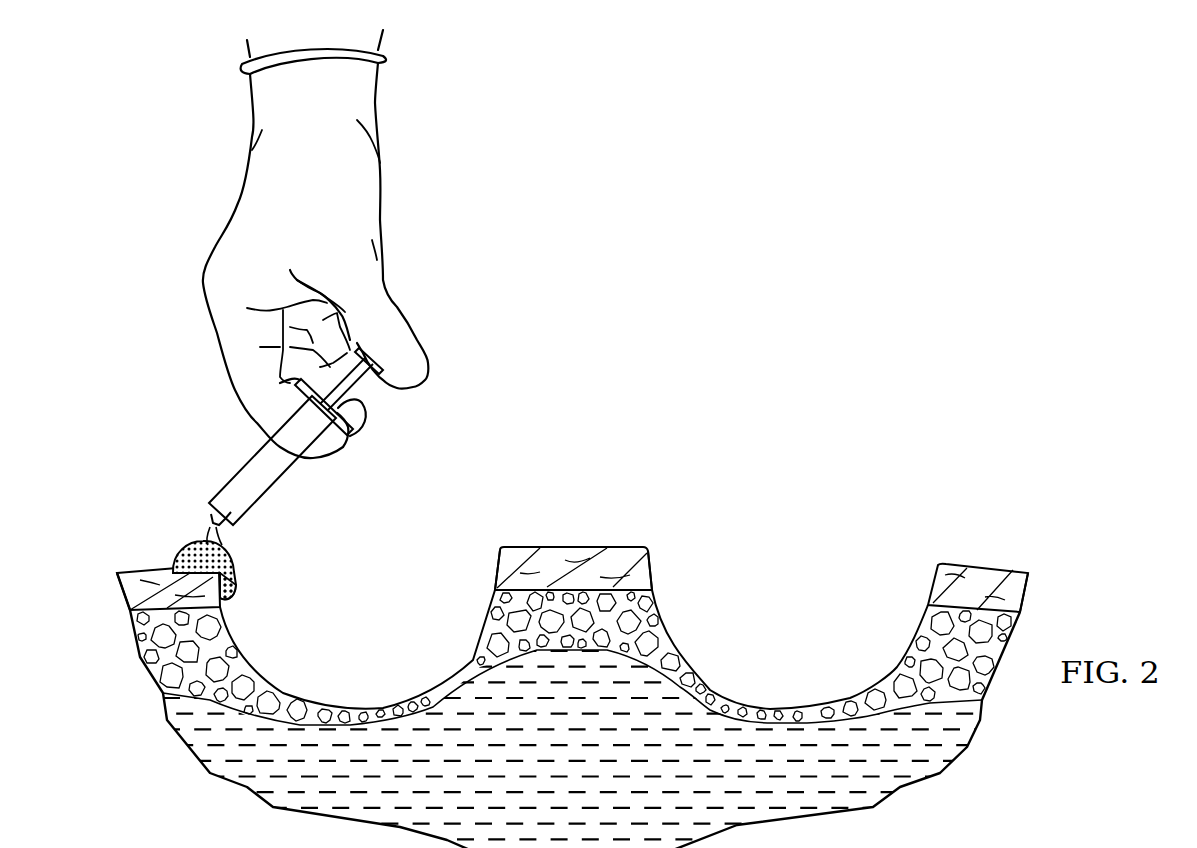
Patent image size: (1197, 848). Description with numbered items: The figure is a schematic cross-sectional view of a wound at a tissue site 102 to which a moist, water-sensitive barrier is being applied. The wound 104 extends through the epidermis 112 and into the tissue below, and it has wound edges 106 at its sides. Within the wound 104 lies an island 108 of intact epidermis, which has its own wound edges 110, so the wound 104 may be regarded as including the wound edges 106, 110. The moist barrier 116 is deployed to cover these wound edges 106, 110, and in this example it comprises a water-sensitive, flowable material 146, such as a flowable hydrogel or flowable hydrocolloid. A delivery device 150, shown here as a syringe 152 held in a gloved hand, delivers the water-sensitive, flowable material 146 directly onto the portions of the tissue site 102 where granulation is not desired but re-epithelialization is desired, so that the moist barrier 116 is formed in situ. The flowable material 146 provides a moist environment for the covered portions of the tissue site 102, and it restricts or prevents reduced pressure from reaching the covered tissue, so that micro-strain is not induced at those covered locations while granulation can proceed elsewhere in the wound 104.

The tissue site 102 is at (437, 693).
The wound 104 is at (282, 693).
The wound edges 106 is at (170, 573).
The island of intact epidermis 108 is at (565, 545).
The wound edges 110 is at (497, 565).
The epidermis 112 is at (1030, 590).
The moist barrier 116 is at (233, 543).
The water-sensitive, flowable material 146 is at (235, 573).
The delivery device 150 is at (242, 468).
The syringe 152 is at (265, 455).